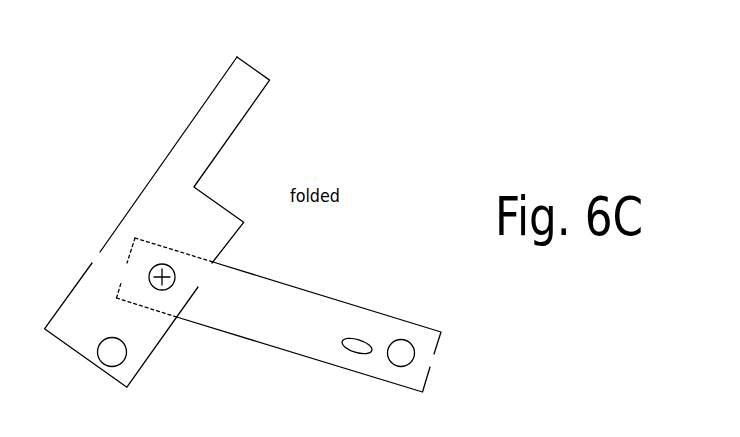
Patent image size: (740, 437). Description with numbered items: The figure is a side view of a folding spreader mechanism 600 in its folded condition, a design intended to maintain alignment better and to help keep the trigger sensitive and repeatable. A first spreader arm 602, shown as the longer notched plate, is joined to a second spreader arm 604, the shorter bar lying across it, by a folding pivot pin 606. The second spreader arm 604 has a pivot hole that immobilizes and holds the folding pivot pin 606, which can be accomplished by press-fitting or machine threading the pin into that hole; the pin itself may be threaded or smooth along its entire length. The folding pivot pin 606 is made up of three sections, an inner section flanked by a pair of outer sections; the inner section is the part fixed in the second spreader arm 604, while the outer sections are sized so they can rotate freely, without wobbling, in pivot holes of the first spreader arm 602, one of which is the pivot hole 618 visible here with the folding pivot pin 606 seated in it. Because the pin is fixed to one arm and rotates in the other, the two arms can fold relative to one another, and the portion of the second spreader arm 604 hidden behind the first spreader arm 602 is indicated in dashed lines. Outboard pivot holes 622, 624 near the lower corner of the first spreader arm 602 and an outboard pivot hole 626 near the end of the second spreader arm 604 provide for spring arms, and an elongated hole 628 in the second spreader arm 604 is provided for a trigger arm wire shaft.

The folding spreader mechanism 600 is at (132, 143).
The first spreader arm 602 is at (198, 232).
The second spreader arm 604 is at (313, 330).
The folding pivot pin 606 is at (150, 284).
The pivot hole 618 is at (177, 273).
The outboard pivot hole 622 is at (97, 340).
The outboard pivot hole 624 is at (95, 367).
The outboard pivot hole 626 is at (413, 355).
The hole 628 is at (357, 346).